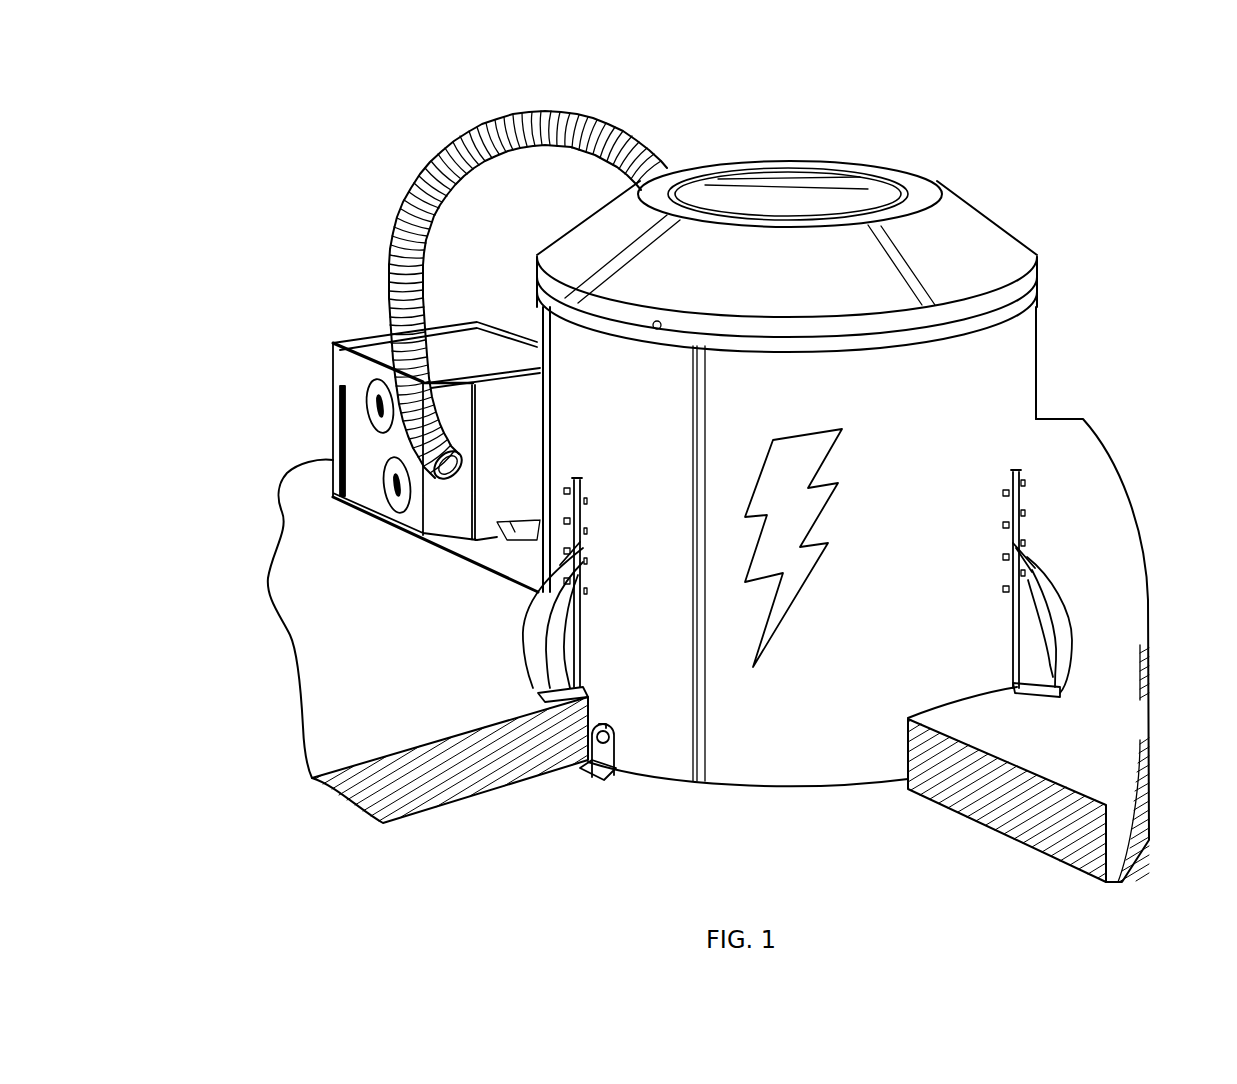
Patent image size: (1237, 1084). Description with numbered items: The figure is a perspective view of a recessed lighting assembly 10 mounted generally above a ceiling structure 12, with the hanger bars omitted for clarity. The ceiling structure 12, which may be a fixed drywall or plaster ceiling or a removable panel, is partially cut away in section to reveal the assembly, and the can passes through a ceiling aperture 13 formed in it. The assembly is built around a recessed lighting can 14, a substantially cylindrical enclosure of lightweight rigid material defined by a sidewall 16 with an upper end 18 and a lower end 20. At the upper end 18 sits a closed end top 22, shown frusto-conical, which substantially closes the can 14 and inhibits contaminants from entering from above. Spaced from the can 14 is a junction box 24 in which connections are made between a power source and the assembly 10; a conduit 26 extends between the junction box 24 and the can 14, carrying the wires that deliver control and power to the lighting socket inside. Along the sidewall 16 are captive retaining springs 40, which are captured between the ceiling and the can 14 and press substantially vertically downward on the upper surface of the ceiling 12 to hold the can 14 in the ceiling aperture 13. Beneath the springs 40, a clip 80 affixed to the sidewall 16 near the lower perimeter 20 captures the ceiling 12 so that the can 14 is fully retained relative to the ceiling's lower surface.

The recessed lighting assembly 10 is at (1041, 160).
The ceiling structure 12 is at (397, 641).
The ceiling aperture 13 is at (992, 712).
The recessed lighting can 14 is at (1075, 383).
The sidewall 16 is at (940, 464).
The upper end 18 is at (1075, 278).
The lower end 20 is at (808, 804).
The closed end top 22 is at (912, 180).
The junction box 24 is at (288, 358).
The conduit 26 is at (467, 150).
The captive retaining spring 40 is at (505, 660).
The clip 80 is at (610, 775).